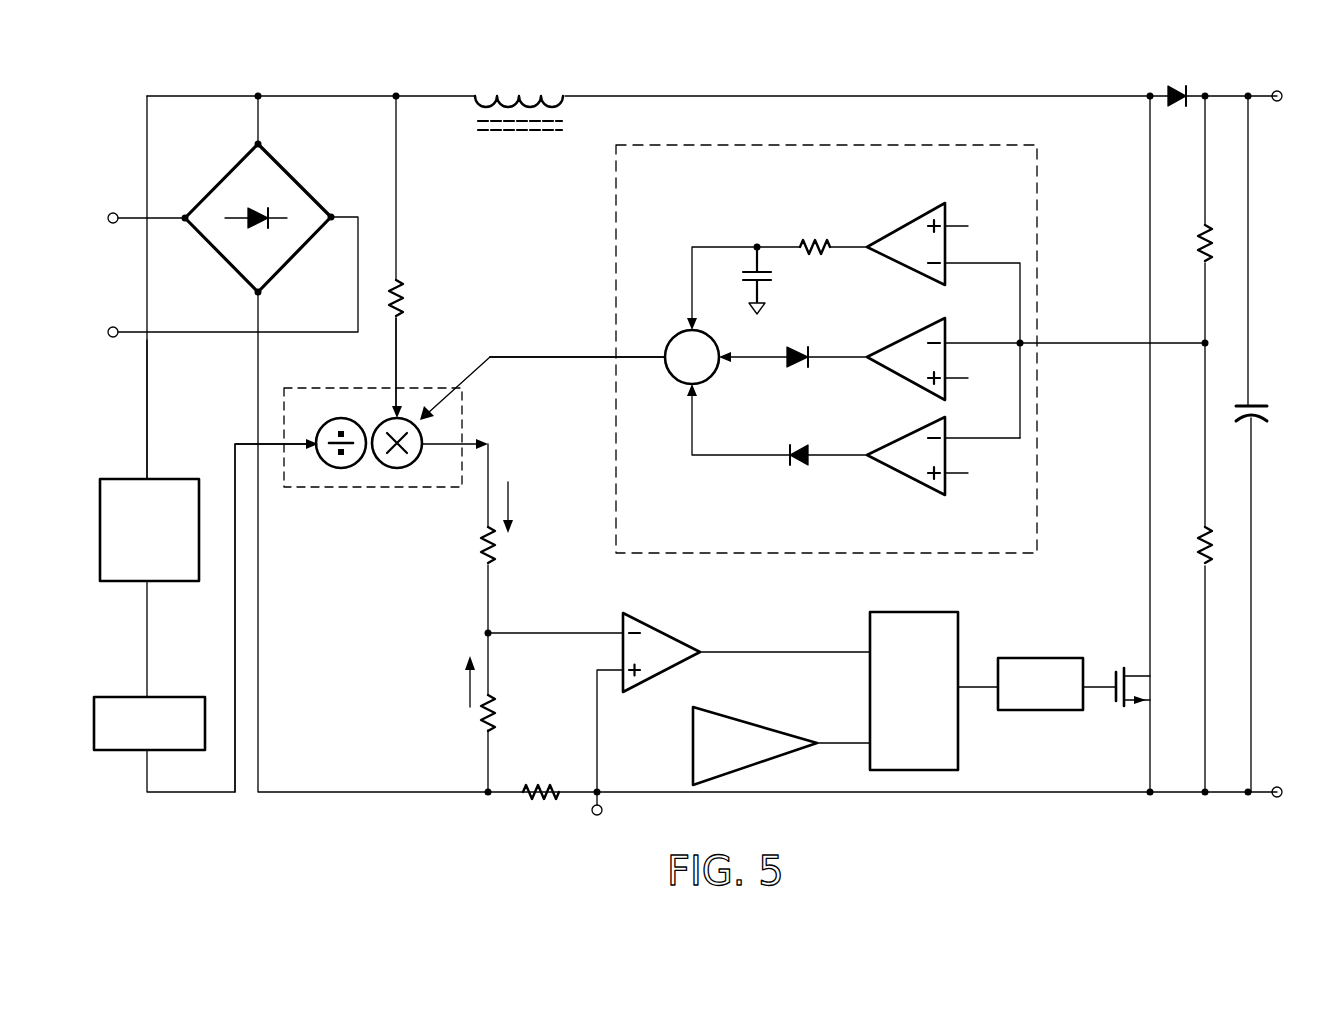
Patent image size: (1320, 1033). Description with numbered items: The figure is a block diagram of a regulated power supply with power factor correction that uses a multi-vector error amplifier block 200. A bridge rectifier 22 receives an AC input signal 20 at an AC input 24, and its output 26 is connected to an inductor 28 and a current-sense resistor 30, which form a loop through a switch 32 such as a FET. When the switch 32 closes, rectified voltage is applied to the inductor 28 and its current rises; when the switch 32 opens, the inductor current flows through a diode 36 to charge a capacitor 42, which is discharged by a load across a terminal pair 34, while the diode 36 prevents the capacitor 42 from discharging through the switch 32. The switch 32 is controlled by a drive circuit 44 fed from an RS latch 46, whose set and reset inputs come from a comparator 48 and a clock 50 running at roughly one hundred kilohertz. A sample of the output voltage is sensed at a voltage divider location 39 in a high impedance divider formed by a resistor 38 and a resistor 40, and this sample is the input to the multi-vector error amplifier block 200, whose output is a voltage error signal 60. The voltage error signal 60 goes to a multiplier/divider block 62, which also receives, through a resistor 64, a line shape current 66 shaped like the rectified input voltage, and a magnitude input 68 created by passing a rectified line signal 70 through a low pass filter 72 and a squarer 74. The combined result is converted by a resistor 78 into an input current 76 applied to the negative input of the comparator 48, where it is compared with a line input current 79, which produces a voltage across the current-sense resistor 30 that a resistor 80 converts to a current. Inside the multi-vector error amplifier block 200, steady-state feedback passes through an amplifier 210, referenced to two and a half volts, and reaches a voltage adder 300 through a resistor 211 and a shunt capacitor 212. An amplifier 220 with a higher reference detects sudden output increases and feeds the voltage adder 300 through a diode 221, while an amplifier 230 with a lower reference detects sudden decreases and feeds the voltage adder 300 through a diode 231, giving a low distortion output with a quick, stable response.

The AC input signal 20 is at (109, 214).
The bridge rectifier 22 is at (300, 167).
The AC input 24 is at (338, 214).
The output 26 is at (251, 142).
The inductor 28 is at (521, 140).
The current-sense resistor 30 is at (536, 780).
The switch 32 is at (1155, 688).
The terminal pair 34 is at (605, 812).
The diode 36 is at (1172, 113).
The resistor 38 is at (1215, 245).
The voltage divider location 39 is at (1215, 342).
The resistor 40 is at (1190, 554).
The capacitor 42 is at (1252, 432).
The drive circuit 44 is at (1040, 656).
The RS latch 46 is at (962, 752).
The comparator 48 is at (682, 614).
The clock 50 is at (742, 716).
The voltage error signal 60 is at (543, 352).
The multiplier/divider block 62 is at (362, 490).
The resistor 64 is at (410, 296).
The line shape current 66 is at (405, 352).
The magnitude input 68 is at (231, 626).
The rectified line signal 70 is at (153, 415).
The low pass filter 72 is at (105, 475).
The squarer 74 is at (103, 696).
The input current 76 is at (520, 500).
The resistor 78 is at (475, 564).
The line input current 79 is at (460, 686).
The resistor 80 is at (480, 736).
The multi-vector error amplifier block 200 is at (1040, 268).
The amplifier 210 is at (901, 216).
The resistor 211 is at (811, 232).
The shunt capacitor 212 is at (742, 274).
The amplifier 220 is at (889, 340).
The diode 221 is at (786, 380).
The amplifier 230 is at (920, 494).
The diode 231 is at (796, 472).
The voltage adder 300 is at (678, 388).